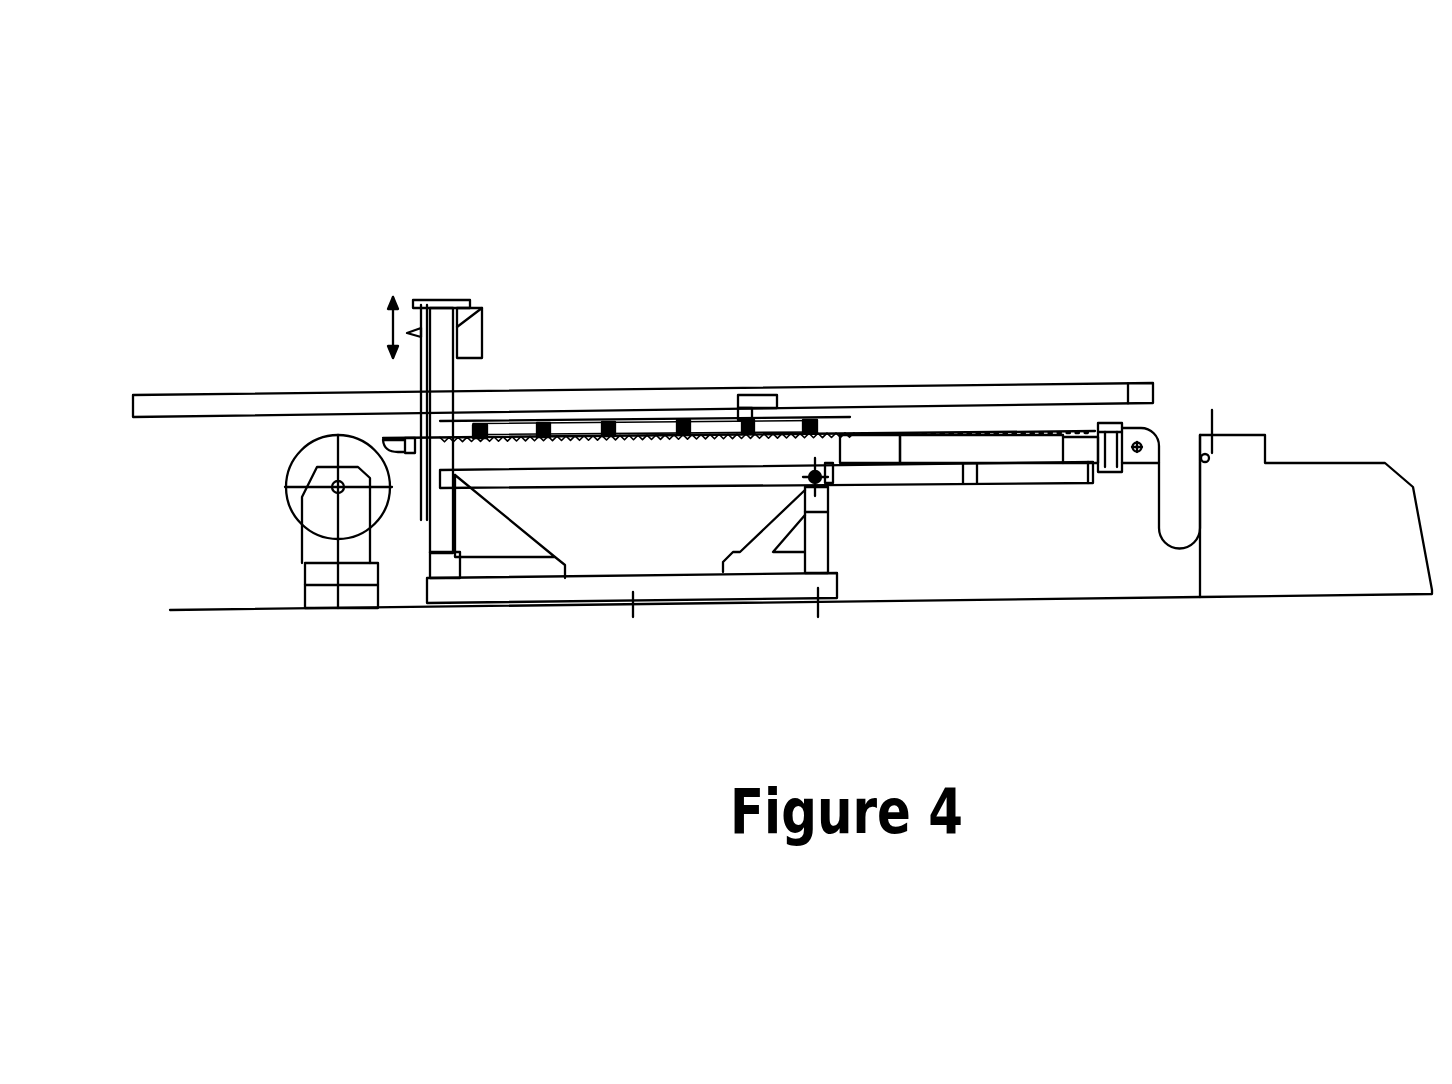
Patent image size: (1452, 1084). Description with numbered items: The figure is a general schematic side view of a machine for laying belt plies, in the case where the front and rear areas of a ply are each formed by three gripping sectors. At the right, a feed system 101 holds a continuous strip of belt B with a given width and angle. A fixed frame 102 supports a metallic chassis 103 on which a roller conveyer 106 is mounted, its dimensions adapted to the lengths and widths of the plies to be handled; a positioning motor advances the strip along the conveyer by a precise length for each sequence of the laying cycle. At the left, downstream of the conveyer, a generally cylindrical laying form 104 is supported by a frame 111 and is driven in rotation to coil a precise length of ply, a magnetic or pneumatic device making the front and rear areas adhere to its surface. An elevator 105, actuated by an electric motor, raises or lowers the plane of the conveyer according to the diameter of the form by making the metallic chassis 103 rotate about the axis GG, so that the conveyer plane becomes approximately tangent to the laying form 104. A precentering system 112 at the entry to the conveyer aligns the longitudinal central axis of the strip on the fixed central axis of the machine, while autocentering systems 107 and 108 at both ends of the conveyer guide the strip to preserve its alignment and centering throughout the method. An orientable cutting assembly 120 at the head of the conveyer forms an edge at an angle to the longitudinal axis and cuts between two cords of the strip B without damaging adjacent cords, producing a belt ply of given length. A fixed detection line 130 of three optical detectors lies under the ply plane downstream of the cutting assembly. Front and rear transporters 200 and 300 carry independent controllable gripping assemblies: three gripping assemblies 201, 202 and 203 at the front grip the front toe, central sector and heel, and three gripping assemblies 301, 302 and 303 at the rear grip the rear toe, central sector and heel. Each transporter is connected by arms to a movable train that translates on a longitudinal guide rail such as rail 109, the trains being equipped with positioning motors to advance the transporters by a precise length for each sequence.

The feed system 101 is at (1313, 463).
The fixed frame 102 is at (502, 530).
The metallic chassis 103 is at (615, 477).
The laying form 104 is at (285, 492).
The elevator 105 is at (418, 300).
The roller conveyer 106 is at (663, 433).
The autocentering system 107 is at (1108, 423).
The autocentering system 108 is at (397, 437).
The longitudinal guide rail 109 is at (915, 392).
The frame 111 is at (310, 545).
The precentering system 112 is at (1143, 427).
The orientable cutting assembly 120 is at (968, 445).
The fixed detection line 130 is at (878, 447).
The front transporter 200 is at (510, 423).
The gripping assembly 201 is at (485, 423).
The gripping assembly 202 is at (550, 423).
The gripping assembly 203 is at (603, 423).
The rear transporter 300 is at (715, 418).
The gripping assembly 301 is at (810, 422).
The gripping assembly 302 is at (753, 422).
The gripping assembly 303 is at (687, 422).
The continuous strip of belt B is at (1158, 493).
The axis GG' GG is at (827, 490).